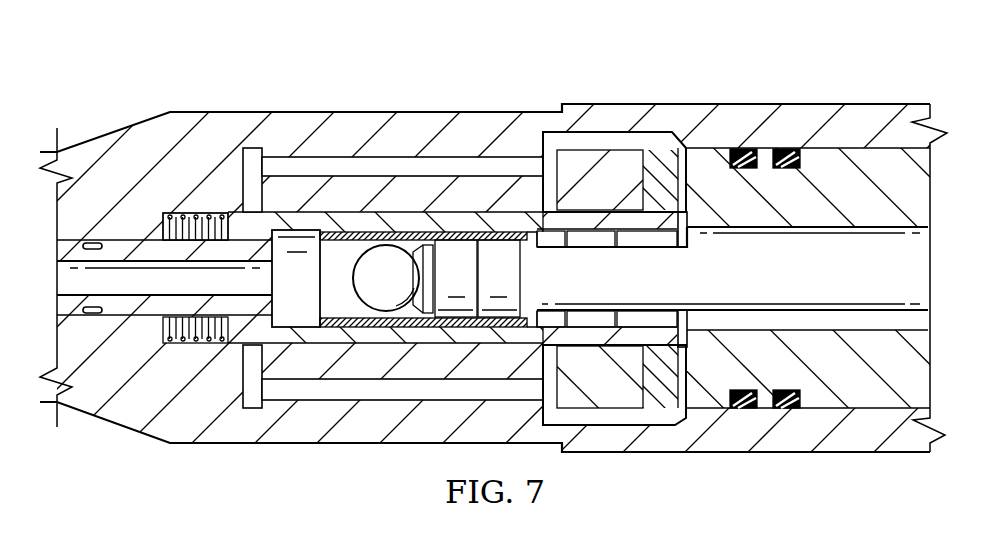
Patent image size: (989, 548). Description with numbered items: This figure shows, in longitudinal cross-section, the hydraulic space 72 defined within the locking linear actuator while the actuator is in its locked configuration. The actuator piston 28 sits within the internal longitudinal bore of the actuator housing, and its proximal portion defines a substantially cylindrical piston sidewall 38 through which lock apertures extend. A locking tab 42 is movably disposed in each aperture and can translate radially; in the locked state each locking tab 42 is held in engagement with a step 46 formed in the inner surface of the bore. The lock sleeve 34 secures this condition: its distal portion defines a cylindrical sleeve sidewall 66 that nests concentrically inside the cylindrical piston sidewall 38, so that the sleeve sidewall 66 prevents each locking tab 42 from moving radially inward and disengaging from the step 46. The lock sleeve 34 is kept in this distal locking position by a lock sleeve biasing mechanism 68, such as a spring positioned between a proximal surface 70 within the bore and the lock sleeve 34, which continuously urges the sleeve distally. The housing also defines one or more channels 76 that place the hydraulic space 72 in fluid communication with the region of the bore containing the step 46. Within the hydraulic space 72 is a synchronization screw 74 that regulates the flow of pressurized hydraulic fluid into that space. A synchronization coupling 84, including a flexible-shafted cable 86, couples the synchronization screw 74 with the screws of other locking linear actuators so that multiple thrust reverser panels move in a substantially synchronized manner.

The actuator piston 28 is at (630, 165).
The lock sleeve 34 is at (368, 335).
The cylindrical piston sidewall 38 is at (592, 216).
The locking tab 42 is at (657, 180).
The step 46 is at (663, 148).
The cylindrical sleeve sidewall 66 is at (545, 131).
The lock sleeve biasing mechanism 68 is at (214, 213).
The proximal surface 70 is at (177, 213).
The hydraulic space 72 is at (332, 241).
The synchronization screw 74 is at (389, 248).
The channel 76 is at (410, 157).
The synchronization coupling 84 is at (727, 334).
The flexible-shafted cable 86 is at (888, 310).